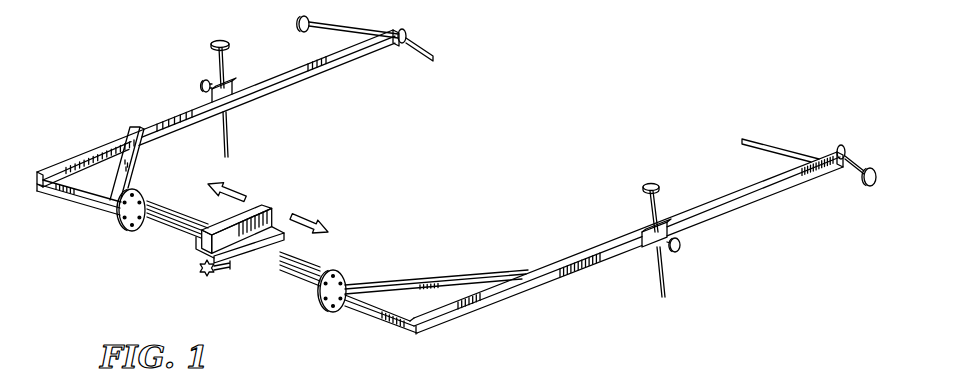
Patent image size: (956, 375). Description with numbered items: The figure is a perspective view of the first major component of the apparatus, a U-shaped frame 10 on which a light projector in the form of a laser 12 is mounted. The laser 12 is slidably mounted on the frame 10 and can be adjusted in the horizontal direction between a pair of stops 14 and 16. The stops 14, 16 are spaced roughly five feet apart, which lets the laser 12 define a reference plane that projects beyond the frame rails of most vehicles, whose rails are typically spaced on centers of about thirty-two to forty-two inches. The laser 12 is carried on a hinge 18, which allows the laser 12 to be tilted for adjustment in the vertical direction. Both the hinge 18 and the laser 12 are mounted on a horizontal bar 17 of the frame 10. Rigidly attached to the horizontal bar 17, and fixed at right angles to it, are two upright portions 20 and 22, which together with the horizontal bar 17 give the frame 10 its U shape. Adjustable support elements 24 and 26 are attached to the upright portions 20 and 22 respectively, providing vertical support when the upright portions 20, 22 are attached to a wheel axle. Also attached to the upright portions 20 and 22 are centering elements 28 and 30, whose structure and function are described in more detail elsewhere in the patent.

The U-shaped frame 10 is at (468, 333).
The laser 12 is at (231, 223).
The stop 14 is at (123, 220).
The stop 16 is at (318, 302).
The horizontal bar 17 is at (95, 197).
The hinge 18 is at (246, 262).
The upright portion 20 is at (157, 122).
The upright portion 22 is at (713, 203).
The adjustable support element 24 is at (218, 62).
The adjustable support element 26 is at (648, 210).
The centering element 28 is at (427, 52).
The centering element 30 is at (767, 145).